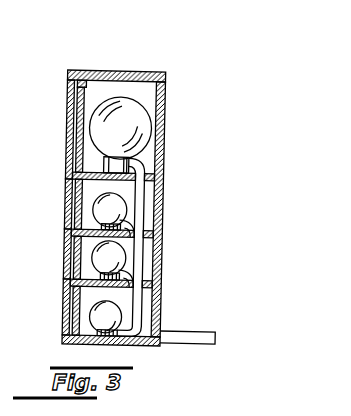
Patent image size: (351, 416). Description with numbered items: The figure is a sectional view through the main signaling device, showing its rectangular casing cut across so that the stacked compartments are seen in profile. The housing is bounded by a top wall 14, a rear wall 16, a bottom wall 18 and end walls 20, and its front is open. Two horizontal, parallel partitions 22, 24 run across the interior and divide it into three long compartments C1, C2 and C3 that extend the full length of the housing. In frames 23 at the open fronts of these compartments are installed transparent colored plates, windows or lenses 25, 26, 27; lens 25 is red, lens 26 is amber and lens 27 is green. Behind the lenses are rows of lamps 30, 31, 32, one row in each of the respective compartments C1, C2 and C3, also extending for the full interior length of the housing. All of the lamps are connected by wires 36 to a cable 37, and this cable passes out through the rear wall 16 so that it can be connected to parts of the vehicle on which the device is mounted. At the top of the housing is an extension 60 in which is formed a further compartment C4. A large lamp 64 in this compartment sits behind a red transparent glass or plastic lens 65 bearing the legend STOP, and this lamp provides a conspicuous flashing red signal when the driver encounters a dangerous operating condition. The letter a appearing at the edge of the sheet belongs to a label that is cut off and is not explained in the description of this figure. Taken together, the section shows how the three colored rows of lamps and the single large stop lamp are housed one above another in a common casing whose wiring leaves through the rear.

The top wall 14 is at (135, 73).
The rear wall 16 is at (165, 133).
The bottom wall 18 is at (80, 345).
The end walls 20 is at (145, 162).
The partition 22 is at (72, 247).
The frames 23 is at (68, 218).
The partition 24 is at (67, 302).
The lens 25 is at (75, 213).
The lens 26 is at (70, 267).
The lens 27 is at (72, 318).
The lamps 30 is at (113, 212).
The lamps 31 is at (120, 263).
The lamps 32 is at (116, 319).
The wires 36 is at (123, 222).
The cable 37 is at (202, 335).
The extension 60 is at (88, 71).
The large lamp 64 is at (88, 127).
The lens 65 is at (72, 153).
The housing part a is at (77, 142).
The compartment C1 is at (175, 215).
The compartment C2 is at (162, 264).
The compartment C3 is at (159, 318).
The compartment C4 is at (123, 124).